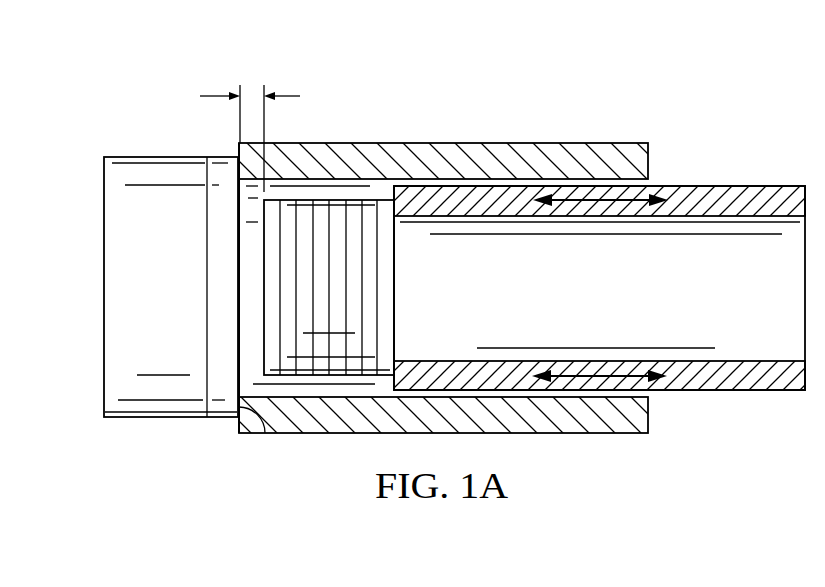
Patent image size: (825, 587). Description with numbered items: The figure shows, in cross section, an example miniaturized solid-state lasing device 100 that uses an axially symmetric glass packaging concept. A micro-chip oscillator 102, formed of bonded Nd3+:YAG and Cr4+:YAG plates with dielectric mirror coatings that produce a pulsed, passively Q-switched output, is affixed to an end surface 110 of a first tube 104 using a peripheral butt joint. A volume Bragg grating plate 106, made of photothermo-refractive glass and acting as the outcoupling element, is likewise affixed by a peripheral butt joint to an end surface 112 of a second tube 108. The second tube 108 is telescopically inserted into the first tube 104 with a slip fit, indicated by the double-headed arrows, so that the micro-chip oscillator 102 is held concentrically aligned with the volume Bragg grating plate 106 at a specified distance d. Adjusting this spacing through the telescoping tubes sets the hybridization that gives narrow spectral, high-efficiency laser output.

The miniaturized solid-state lasing device 100 is at (715, 88).
The micro-chip oscillator 102 is at (158, 156).
The first tube 104 is at (564, 143).
The volume Bragg grating plate 106 is at (395, 300).
The second tube 108 is at (740, 361).
The end surface of the first tube 110 is at (258, 433).
The end surface of the second tube 112 is at (390, 200).